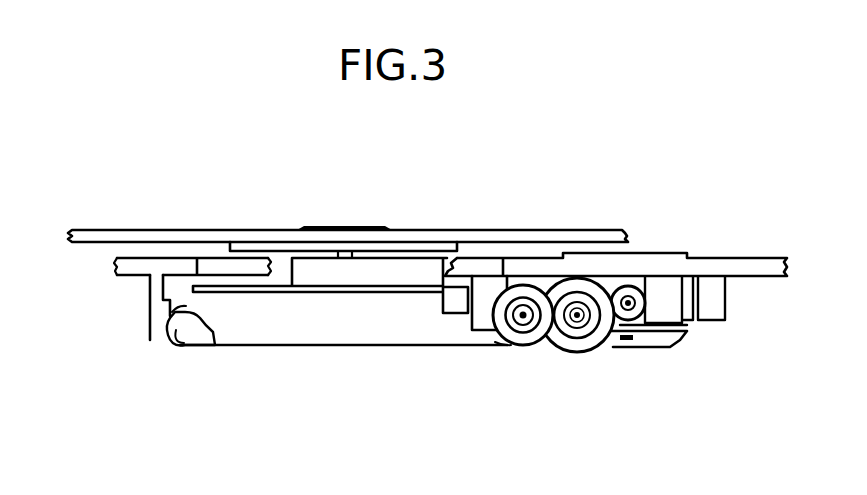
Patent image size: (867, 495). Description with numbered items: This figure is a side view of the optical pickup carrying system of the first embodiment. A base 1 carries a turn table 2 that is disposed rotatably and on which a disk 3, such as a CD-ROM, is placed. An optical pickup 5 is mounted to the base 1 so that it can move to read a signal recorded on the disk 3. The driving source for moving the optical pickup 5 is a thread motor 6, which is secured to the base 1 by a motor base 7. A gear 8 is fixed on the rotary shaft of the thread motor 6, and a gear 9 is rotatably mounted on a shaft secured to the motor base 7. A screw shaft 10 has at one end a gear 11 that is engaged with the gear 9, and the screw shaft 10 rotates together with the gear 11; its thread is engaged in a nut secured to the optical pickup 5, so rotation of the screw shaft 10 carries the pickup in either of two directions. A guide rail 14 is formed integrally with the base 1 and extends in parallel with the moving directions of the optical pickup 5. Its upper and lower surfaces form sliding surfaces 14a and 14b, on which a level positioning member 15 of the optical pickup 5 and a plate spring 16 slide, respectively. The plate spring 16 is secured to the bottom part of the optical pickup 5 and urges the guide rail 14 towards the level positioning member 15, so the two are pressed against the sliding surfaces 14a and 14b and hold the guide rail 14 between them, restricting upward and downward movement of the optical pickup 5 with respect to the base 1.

The base 1 is at (118, 258).
The turn table 2 is at (323, 229).
The disk 3 is at (183, 233).
The optical pickup 5 is at (318, 323).
The thread motor 6 is at (648, 342).
The motor base 7 is at (680, 337).
The gear 8 is at (630, 300).
The gear 9 is at (573, 355).
The screw shaft 10 is at (523, 313).
The gear 11 is at (510, 345).
The guide rail 14 is at (165, 343).
The sliding surface 14a is at (168, 314).
The sliding surface 14b is at (180, 348).
The level positioning member 15 is at (158, 291).
The plate spring 16 is at (193, 348).